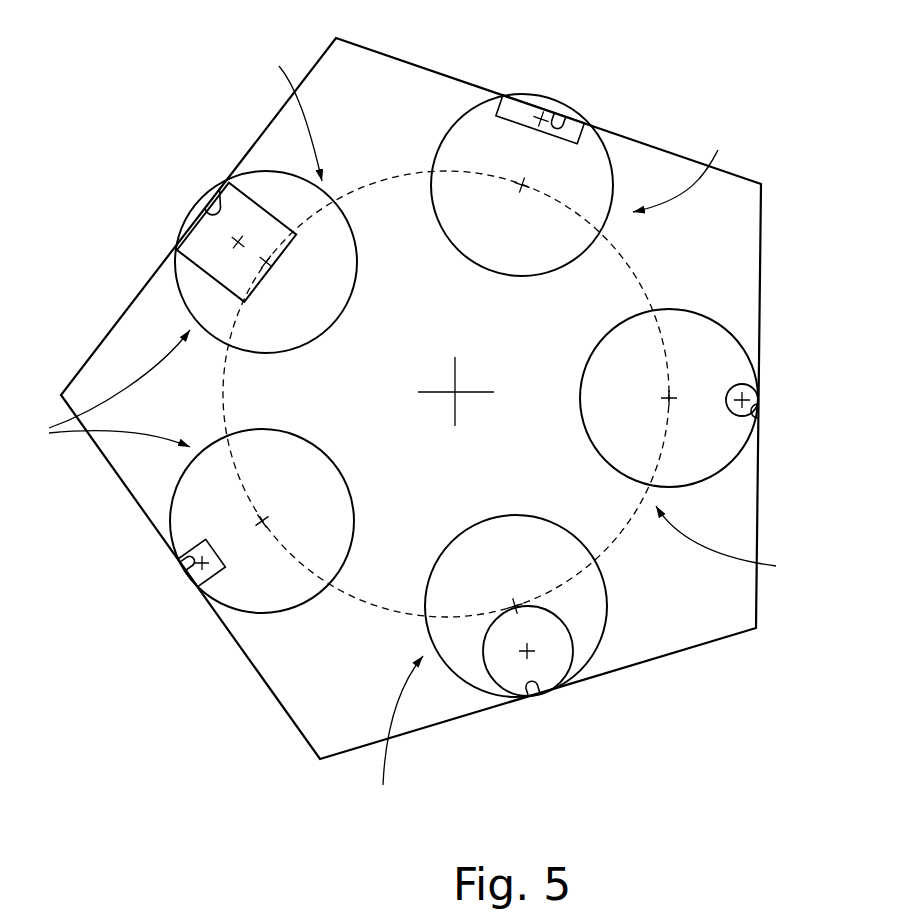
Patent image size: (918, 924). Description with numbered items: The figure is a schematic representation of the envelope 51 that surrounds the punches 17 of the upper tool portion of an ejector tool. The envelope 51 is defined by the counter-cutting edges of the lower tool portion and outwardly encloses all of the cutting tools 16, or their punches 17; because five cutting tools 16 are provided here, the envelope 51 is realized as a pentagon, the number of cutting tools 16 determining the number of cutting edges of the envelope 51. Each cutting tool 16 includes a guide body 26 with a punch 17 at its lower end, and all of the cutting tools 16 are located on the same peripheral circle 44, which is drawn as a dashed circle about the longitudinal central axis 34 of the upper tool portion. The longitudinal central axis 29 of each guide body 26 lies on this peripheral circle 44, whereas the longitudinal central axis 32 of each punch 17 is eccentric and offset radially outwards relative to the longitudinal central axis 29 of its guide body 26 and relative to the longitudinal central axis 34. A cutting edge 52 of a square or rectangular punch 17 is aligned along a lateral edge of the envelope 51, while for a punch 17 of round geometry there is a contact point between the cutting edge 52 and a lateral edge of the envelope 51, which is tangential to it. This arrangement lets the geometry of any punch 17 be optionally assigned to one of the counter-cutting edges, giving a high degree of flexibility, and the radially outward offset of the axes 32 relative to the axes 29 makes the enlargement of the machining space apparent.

The cutting tool 16 is at (411, 426).
The punch 17 is at (197, 247).
The guide body 26 is at (518, 564).
The longitudinal central axis of the guide body 29 is at (266, 256).
The longitudinal central axis of the punch 32 is at (233, 243).
The longitudinal central axis of the upper tool portion 34 is at (456, 392).
The peripheral circle 44 is at (388, 178).
The envelope 51 is at (696, 646).
The cutting edge 52 is at (219, 186).